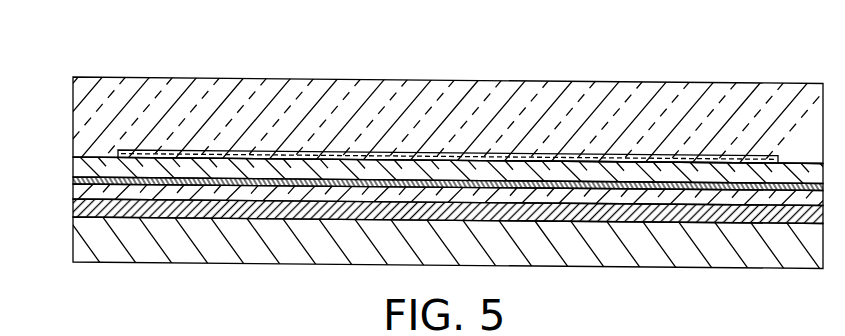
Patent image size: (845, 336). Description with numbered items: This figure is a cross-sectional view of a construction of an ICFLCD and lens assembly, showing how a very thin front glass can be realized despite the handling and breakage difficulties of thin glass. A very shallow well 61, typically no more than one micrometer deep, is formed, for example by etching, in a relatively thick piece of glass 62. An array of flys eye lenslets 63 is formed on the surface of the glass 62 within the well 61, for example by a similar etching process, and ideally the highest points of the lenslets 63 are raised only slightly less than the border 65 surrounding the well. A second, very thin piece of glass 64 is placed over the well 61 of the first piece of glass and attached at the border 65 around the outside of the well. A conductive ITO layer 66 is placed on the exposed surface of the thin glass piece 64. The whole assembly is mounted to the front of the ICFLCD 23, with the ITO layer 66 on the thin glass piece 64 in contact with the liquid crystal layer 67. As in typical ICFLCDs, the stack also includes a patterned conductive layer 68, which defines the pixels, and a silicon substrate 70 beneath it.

The ICFLCD 23 is at (65, 200).
The well 61 is at (122, 150).
The piece of glass 62 is at (118, 95).
The flys eye lenslets 63 is at (351, 153).
The thin piece of glass 64 is at (447, 168).
The border 65 is at (792, 160).
The conductive ITO layer 66 is at (563, 182).
The liquid crystal layer 67 is at (632, 196).
The patterned conductive layer 68 is at (665, 213).
The silicon substrate 70 is at (773, 246).